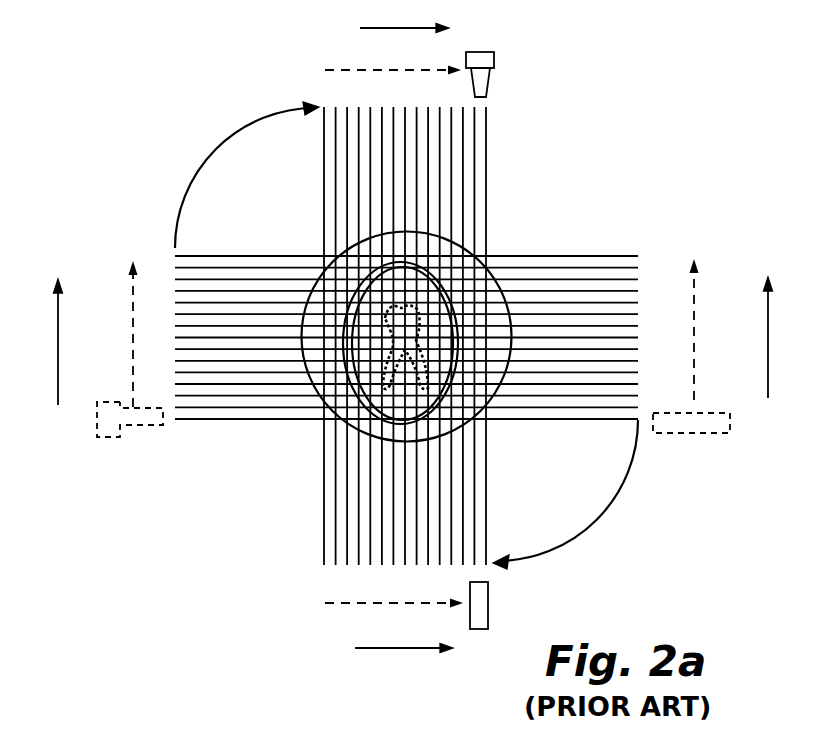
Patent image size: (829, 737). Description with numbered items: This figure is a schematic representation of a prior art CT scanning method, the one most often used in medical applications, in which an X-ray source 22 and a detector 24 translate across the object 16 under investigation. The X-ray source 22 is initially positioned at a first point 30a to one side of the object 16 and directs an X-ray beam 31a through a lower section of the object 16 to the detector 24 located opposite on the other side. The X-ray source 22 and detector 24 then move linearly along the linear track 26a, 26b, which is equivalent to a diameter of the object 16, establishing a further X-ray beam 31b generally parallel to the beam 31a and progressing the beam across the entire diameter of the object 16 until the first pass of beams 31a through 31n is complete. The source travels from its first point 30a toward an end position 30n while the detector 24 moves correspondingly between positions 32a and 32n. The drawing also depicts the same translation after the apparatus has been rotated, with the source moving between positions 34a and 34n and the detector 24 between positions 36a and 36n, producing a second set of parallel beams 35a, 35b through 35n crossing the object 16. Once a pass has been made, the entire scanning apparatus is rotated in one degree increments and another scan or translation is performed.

The object 16 is at (455, 425).
The X-ray source 22 is at (492, 77).
The detector 24 is at (482, 607).
The linear track 26a is at (345, 72).
The linear track 26b is at (345, 603).
The first point 30a is at (60, 365).
The last source position (left) 30n is at (61, 273).
The X-ray beam 31a is at (216, 420).
The X-ray beam 31b is at (293, 408).
The X-ray beam 31n is at (207, 256).
The first detector position (right) 32a is at (770, 358).
The last detector position (right) 32n is at (771, 272).
The first source position (top) 34a is at (379, 29).
The last source position (top) 34n is at (466, 29).
The first vertical ray 35a is at (324, 180).
The second vertical ray 35b is at (336, 228).
The last vertical ray 35n is at (486, 160).
The first detector position (bottom) 36a is at (377, 649).
The last detector position (bottom) 36n is at (470, 652).